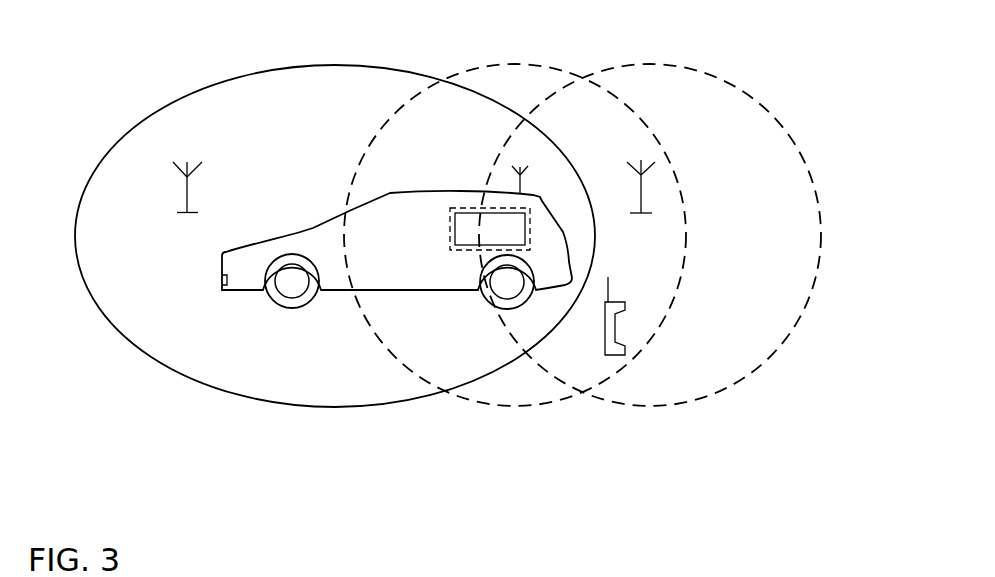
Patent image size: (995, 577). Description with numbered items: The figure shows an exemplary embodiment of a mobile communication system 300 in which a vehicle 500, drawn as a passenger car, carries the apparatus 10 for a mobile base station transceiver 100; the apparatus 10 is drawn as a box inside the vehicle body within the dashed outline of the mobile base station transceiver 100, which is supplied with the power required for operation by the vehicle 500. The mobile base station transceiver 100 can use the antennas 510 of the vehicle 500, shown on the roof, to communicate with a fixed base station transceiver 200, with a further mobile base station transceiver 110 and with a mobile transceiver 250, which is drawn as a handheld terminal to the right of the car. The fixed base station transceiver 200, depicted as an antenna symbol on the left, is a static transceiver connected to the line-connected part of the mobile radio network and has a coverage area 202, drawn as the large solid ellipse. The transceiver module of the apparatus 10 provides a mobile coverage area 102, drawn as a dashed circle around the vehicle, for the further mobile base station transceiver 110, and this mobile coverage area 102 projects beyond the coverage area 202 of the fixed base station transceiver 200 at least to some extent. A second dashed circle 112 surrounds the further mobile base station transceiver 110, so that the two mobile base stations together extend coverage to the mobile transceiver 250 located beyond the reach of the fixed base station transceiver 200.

The apparatus 10 is at (468, 215).
The mobile base station transceiver 100 is at (448, 225).
The mobile coverage area 102 is at (538, 403).
The further mobile base station transceiver 110 is at (644, 213).
The communication range of external antenna 112 is at (675, 404).
The fixed base station transceiver 200 is at (182, 213).
The coverage area 202 is at (468, 382).
The mobile transceiver 250 is at (615, 351).
The mobile communication system 300 is at (442, 453).
The vehicle 500 is at (453, 289).
The antennas 510 is at (518, 184).